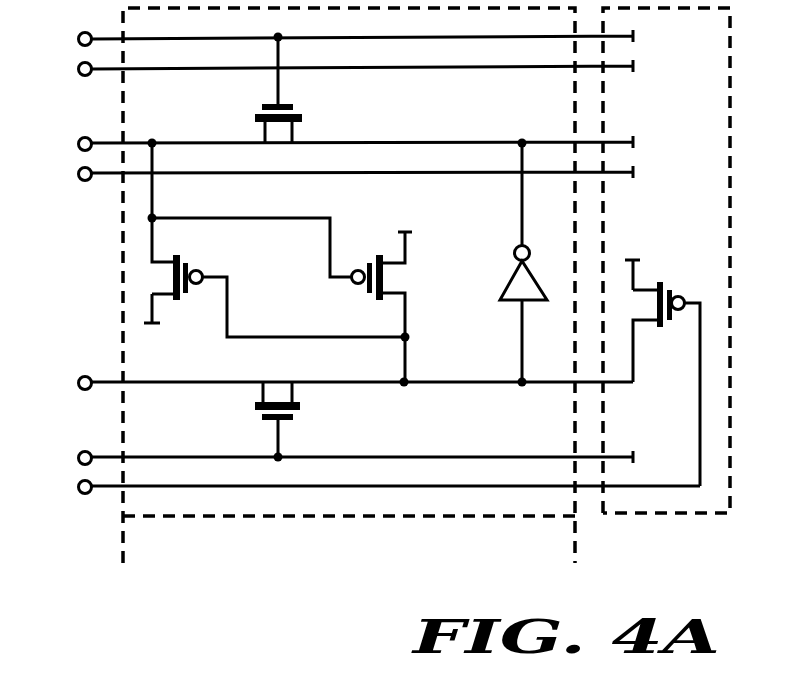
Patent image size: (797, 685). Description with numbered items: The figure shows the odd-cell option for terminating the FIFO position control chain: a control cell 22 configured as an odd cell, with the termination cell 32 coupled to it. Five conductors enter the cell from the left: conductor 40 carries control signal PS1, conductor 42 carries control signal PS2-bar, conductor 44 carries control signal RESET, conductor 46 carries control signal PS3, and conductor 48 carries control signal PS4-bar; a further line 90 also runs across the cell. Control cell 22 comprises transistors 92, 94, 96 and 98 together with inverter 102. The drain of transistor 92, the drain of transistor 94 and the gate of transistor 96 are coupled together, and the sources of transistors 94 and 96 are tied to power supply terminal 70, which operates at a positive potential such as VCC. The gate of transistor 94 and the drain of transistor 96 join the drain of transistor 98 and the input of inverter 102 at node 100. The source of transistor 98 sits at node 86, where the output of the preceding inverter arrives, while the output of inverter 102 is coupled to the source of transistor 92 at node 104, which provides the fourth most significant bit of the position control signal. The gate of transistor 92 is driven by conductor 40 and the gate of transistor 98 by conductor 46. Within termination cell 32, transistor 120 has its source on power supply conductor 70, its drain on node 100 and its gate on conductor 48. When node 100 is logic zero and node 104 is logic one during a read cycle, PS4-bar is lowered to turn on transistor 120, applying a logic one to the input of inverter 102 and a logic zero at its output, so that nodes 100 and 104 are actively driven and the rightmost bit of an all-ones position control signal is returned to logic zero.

The control cell 22 is at (349, 288).
The termination cell 32 is at (707, 73).
The conductor 40 is at (78, 38).
The conductor 42 is at (78, 71).
The conductor 44 is at (78, 176).
The conductor 46 is at (78, 456).
The conductor 48 is at (78, 489).
The power supply terminal 70 is at (409, 232).
The node 86 is at (78, 381).
The line 90 is at (78, 143).
The transistor 92 is at (305, 120).
The transistor 94 is at (187, 300).
The transistor 96 is at (368, 300).
The transistor 98 is at (302, 415).
The node 100 is at (406, 388).
The inverter 102 is at (507, 304).
The node 104 is at (520, 138).
The transistor 120 is at (672, 286).